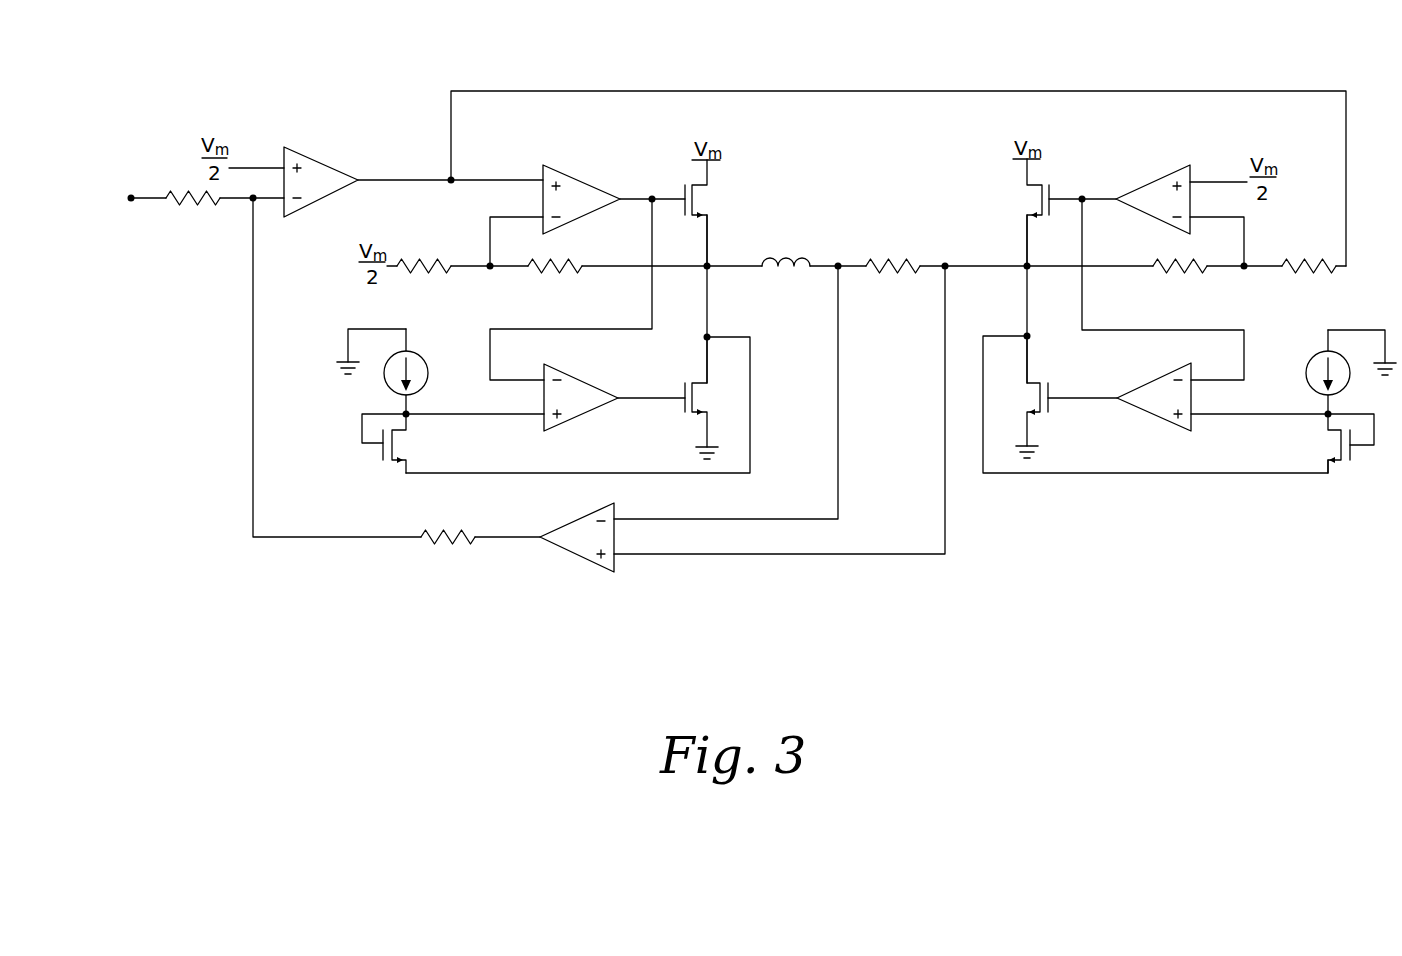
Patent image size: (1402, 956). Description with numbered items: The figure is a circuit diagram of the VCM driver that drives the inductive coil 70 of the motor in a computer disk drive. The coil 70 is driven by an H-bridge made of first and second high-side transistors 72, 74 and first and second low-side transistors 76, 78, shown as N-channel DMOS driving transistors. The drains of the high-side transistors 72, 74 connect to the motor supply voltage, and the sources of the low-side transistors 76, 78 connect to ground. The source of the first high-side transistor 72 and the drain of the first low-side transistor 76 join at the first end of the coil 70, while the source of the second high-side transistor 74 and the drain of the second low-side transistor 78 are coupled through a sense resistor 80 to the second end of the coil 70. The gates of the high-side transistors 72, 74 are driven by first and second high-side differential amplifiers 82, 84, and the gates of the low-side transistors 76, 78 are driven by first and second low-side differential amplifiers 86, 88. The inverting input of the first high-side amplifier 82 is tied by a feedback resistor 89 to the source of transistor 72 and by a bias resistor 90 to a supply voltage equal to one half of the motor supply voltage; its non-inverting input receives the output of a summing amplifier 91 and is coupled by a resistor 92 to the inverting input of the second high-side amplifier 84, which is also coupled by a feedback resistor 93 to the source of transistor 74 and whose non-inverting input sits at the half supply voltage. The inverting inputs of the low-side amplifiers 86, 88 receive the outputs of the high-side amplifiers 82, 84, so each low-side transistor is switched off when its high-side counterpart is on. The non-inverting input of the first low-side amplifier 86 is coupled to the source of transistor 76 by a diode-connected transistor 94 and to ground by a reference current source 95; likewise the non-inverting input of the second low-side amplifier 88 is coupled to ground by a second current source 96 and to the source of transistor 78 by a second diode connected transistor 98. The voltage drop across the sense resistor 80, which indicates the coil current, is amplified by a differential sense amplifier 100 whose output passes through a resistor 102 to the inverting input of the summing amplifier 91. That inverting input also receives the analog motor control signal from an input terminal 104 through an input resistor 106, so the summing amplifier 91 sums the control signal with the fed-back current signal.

The inductive coil 70 is at (795, 270).
The first high-side transistor 72 is at (695, 199).
The second high-side transistor 74 is at (1038, 197).
The first low-side transistor 76 is at (697, 397).
The second low-side transistor 78 is at (1032, 398).
The sense resistor 80 is at (902, 260).
The first high-side differential amplifier 82 is at (578, 186).
The second high-side differential amplifier 84 is at (1154, 186).
The first low-side differential amplifier 86 is at (578, 383).
The second low-side differential amplifier 88 is at (1156, 383).
The feedback resistor 89 is at (554, 276).
The bias resistor 90 is at (424, 276).
The summing amplifier 91 is at (320, 163).
The resistor 92 is at (1299, 276).
The feedback resistor 93 is at (1171, 276).
The diode-connected transistor 94 is at (394, 445).
The reference current source 95 is at (419, 365).
The second current source 96 is at (1314, 365).
The second diode connected transistor 98 is at (1338, 445).
The differential sense amplifier 100 is at (576, 553).
The resistor 102 is at (447, 548).
The input terminal 104 is at (131, 198).
The input resistor 106 is at (196, 209).